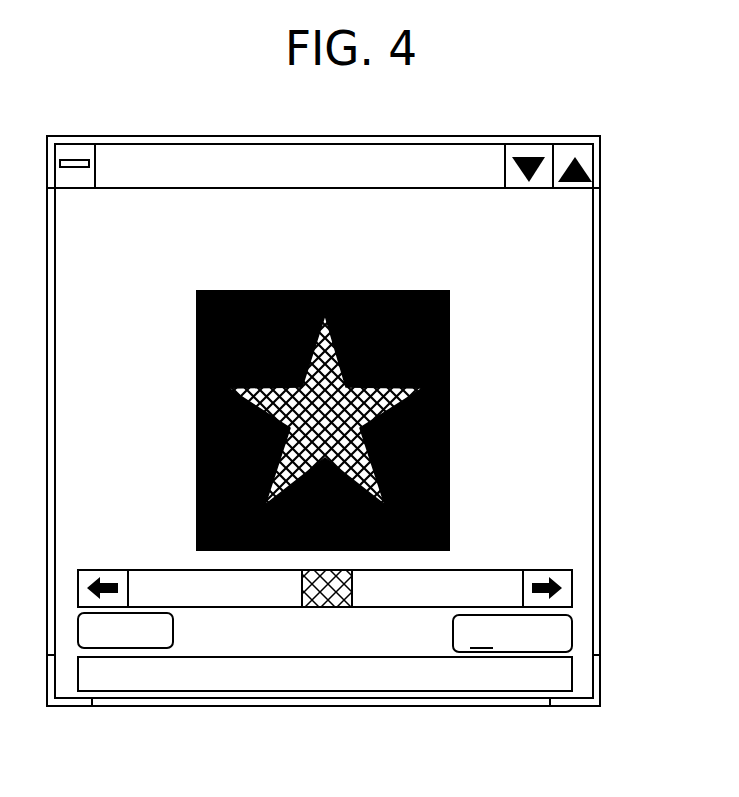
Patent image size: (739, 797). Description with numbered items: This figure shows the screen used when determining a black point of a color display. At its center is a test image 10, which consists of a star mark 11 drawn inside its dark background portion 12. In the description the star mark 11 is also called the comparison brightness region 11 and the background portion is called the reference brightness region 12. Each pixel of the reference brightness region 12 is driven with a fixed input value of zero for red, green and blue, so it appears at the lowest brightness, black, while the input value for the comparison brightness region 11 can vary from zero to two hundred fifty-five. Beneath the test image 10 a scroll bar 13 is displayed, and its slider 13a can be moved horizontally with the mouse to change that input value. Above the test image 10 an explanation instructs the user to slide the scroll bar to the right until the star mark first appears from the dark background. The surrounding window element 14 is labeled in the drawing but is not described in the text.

The test image 10 is at (271, 420).
The star mark 11 is at (196, 433).
The background portion 12 is at (196, 372).
The scroll bar 13 is at (325, 609).
The slider 13a is at (313, 606).
The monitor calibration window 14 is at (580, 241).